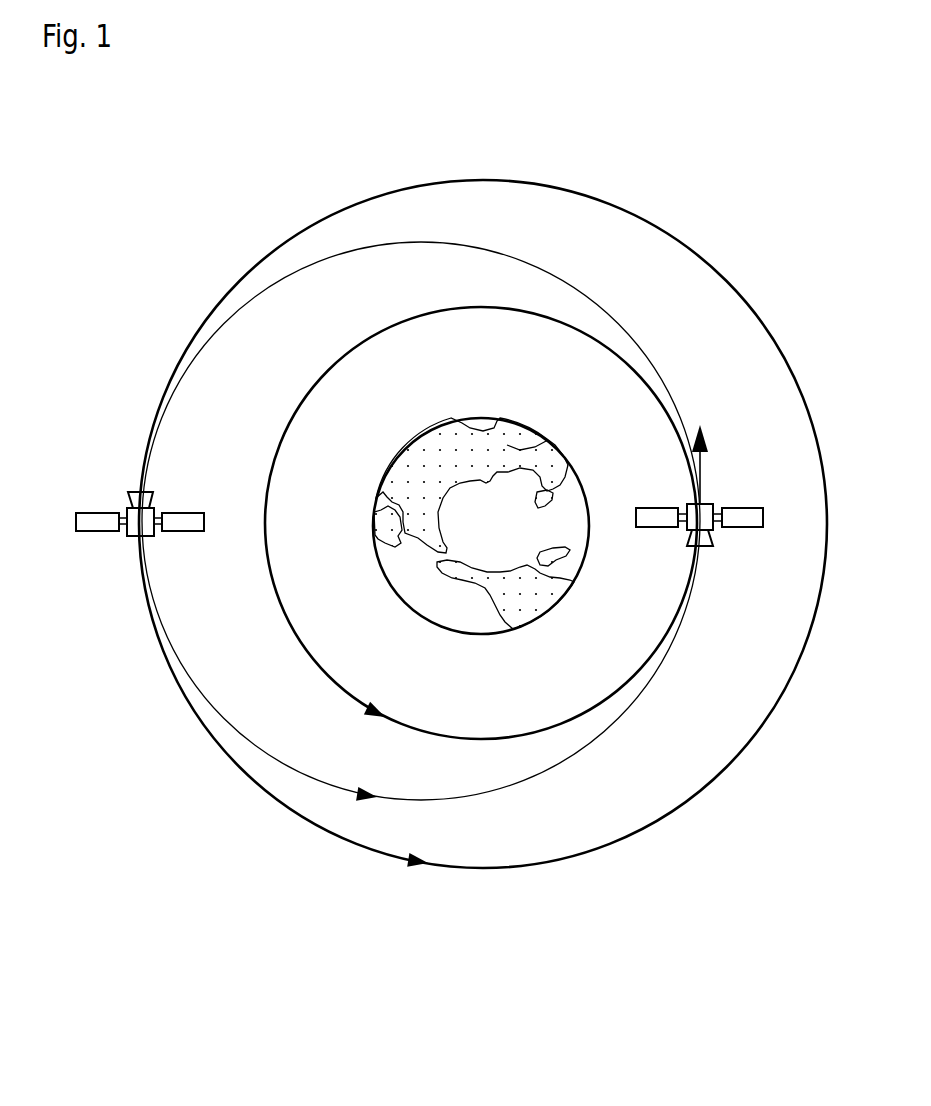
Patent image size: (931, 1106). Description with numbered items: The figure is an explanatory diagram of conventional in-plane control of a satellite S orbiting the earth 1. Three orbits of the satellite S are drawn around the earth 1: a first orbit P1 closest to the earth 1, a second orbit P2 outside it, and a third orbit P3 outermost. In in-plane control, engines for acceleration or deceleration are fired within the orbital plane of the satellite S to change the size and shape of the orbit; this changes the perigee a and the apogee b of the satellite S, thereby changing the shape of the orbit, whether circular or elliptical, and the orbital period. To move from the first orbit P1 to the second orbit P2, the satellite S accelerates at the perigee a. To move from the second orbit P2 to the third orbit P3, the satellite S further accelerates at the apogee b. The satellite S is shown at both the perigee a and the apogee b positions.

The earth 1 is at (494, 539).
The first orbit P1 is at (500, 310).
The second orbit P2 is at (360, 253).
The third orbit P3 is at (680, 238).
The satellite S is at (419, 506).
The perigee a is at (699, 499).
The apogee b is at (140, 534).